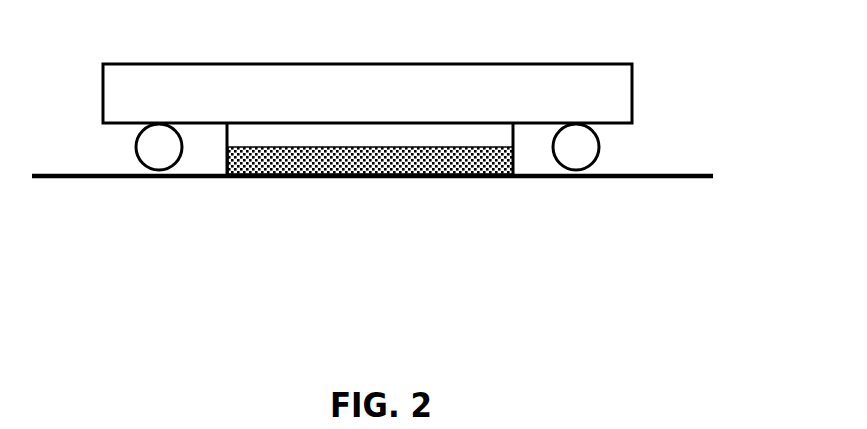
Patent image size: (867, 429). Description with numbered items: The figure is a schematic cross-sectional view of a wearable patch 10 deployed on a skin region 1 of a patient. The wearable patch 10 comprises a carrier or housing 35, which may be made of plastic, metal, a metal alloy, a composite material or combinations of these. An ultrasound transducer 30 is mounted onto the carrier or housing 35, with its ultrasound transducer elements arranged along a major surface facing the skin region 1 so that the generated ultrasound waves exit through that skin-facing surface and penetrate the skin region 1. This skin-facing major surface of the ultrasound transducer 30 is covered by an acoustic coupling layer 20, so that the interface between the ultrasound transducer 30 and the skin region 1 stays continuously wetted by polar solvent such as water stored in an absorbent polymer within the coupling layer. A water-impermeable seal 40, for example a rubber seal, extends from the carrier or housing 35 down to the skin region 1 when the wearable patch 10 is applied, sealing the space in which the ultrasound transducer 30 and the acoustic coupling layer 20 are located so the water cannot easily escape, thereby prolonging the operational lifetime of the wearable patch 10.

The skin region 1 is at (686, 178).
The wearable patch 10 is at (392, 212).
The acoustic coupling layer 20 is at (381, 162).
The ultrasound transducer 30 is at (464, 140).
The carrier or housing 35 is at (620, 98).
The water-impermeable seal 40 is at (163, 155).